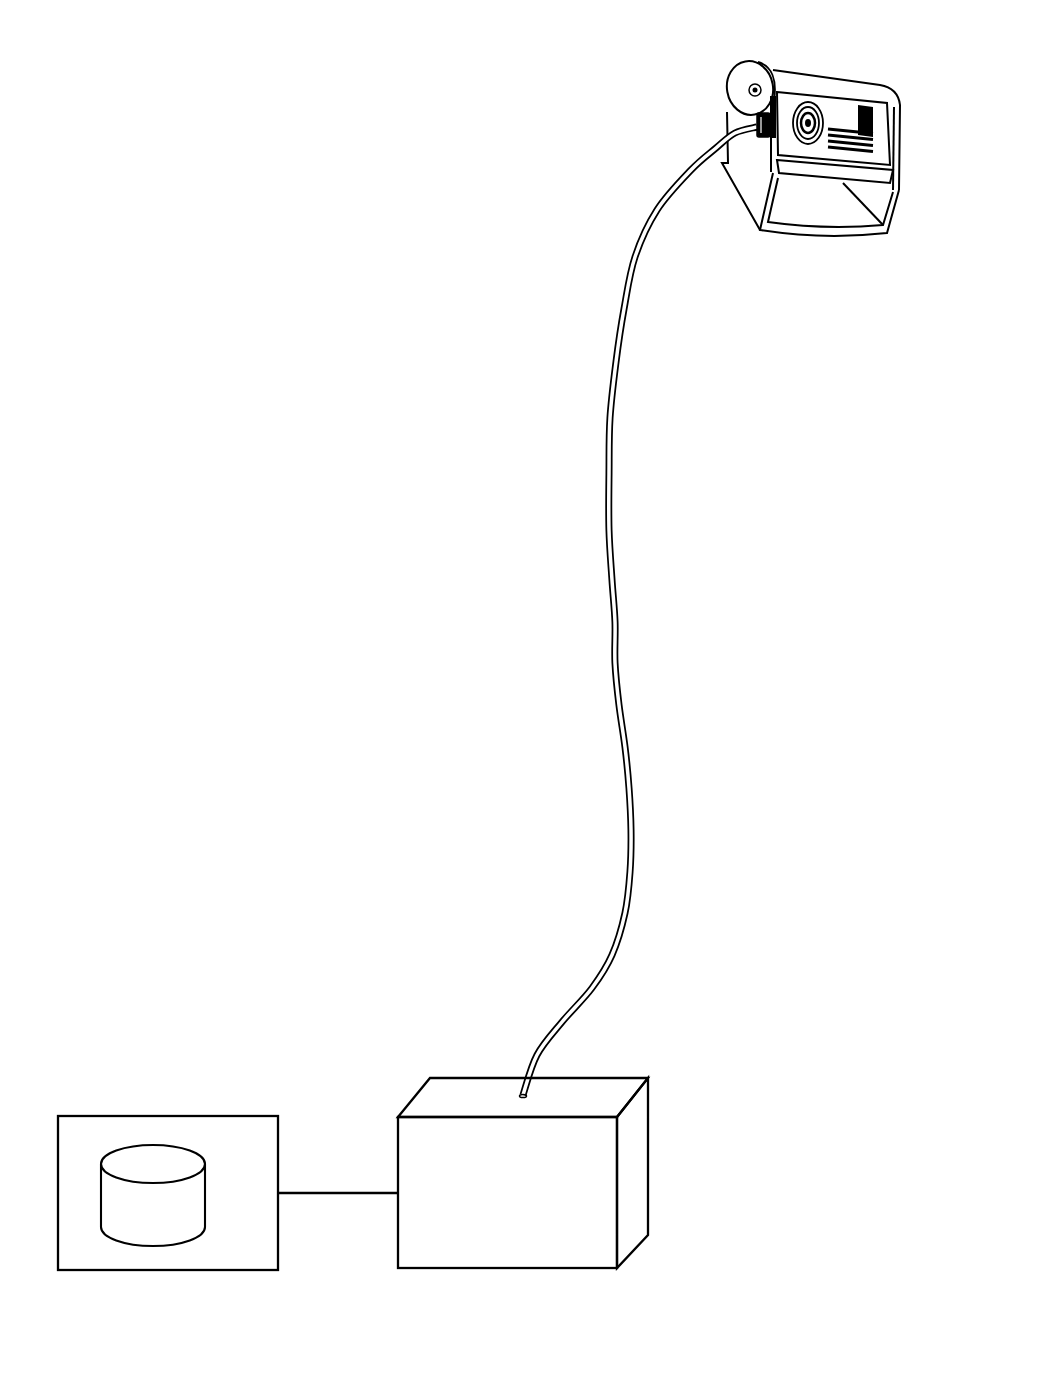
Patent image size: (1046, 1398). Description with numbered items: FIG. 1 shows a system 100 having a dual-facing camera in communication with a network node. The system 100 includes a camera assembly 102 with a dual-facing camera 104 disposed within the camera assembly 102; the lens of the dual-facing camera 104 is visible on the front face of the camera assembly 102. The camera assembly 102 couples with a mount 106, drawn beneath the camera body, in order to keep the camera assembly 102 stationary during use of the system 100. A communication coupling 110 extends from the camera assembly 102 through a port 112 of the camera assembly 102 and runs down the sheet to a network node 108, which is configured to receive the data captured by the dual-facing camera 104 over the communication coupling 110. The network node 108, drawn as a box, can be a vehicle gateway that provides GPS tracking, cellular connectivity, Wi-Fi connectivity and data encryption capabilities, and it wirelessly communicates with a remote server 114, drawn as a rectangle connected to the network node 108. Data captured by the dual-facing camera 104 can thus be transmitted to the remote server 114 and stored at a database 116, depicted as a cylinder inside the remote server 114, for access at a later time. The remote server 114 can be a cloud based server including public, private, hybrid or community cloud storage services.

The system 100 is at (705, 38).
The camera assembly 102 is at (853, 90).
The dual-facing camera 104 is at (822, 122).
The mount 106 is at (807, 200).
The network node 108 is at (637, 1175).
The communication coupling 110 is at (609, 527).
The port 112 is at (757, 120).
The remote server 114 is at (168, 1115).
The database 116 is at (177, 1224).